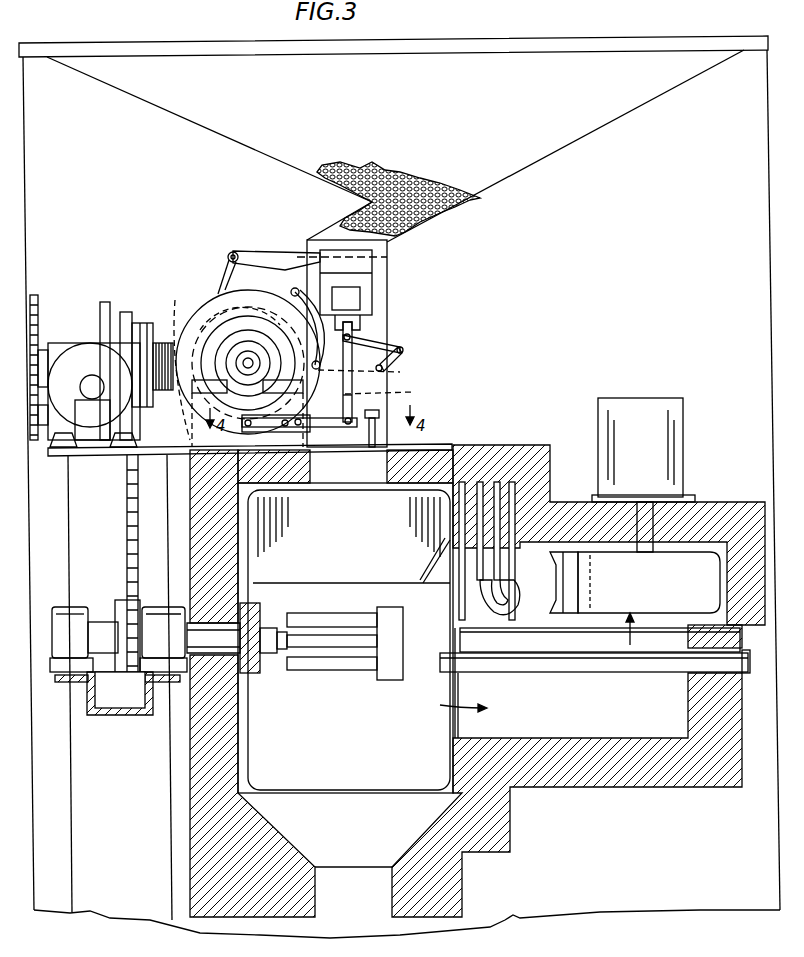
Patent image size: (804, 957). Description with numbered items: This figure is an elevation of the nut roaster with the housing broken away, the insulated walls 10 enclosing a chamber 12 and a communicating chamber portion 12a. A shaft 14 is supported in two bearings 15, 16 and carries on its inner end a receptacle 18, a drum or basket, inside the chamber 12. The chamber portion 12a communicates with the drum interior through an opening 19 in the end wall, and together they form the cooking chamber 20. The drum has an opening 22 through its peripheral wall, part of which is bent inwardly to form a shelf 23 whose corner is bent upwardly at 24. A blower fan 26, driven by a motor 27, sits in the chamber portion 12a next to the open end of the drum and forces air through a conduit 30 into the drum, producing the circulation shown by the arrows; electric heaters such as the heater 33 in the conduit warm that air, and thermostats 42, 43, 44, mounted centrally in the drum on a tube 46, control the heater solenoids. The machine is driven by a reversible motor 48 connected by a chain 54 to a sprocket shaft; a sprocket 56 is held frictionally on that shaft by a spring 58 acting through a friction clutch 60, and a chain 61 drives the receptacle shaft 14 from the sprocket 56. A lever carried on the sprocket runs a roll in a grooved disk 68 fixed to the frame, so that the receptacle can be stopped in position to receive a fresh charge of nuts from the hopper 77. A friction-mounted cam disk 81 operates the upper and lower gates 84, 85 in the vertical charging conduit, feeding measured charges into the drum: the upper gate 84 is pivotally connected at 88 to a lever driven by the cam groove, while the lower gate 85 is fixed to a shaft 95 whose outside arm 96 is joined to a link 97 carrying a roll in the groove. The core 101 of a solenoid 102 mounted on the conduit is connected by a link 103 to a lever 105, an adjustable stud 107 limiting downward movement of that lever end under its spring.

The insulated walls 10 is at (207, 748).
The chamber 12 is at (353, 848).
The chamber portion 12a is at (597, 687).
The shaft 14 is at (108, 658).
The bearing 15 is at (160, 602).
The bearing 16 is at (72, 607).
The receptacle 18 is at (390, 788).
The opening 19 is at (460, 697).
The cooking chamber 20 is at (345, 638).
The opening 22 is at (363, 492).
The shelf 23 is at (350, 573).
The upwardly bent corner portion 24 is at (433, 563).
The blower fan 26 is at (635, 582).
The motor 27 is at (652, 406).
The conduit 30 is at (500, 551).
The electric heater 33 is at (463, 597).
The thermostat 42 is at (298, 613).
The thermostat 43 is at (287, 660).
The thermostat 44 is at (350, 665).
The tube 46 is at (672, 672).
The reversible motor 48 is at (95, 352).
The chain 54 is at (38, 324).
The sprocket 56 is at (128, 312).
The spring 58 is at (173, 343).
The friction clutch 60 is at (145, 325).
The chain 61 is at (130, 500).
The disk 68 is at (108, 300).
The hopper 77 is at (600, 115).
The cam disk 81 is at (212, 298).
The upper gate 84 is at (295, 265).
The lower gate 85 is at (391, 397).
The pivotal connection 88 is at (238, 254).
The shaft 95 is at (372, 374).
The arm 96 is at (382, 368).
The link 97 is at (372, 352).
The core 101 is at (352, 325).
The solenoid 102 is at (358, 297).
The link 103 is at (350, 398).
The lever 105 is at (323, 422).
The adjustable stud 107 is at (376, 436).